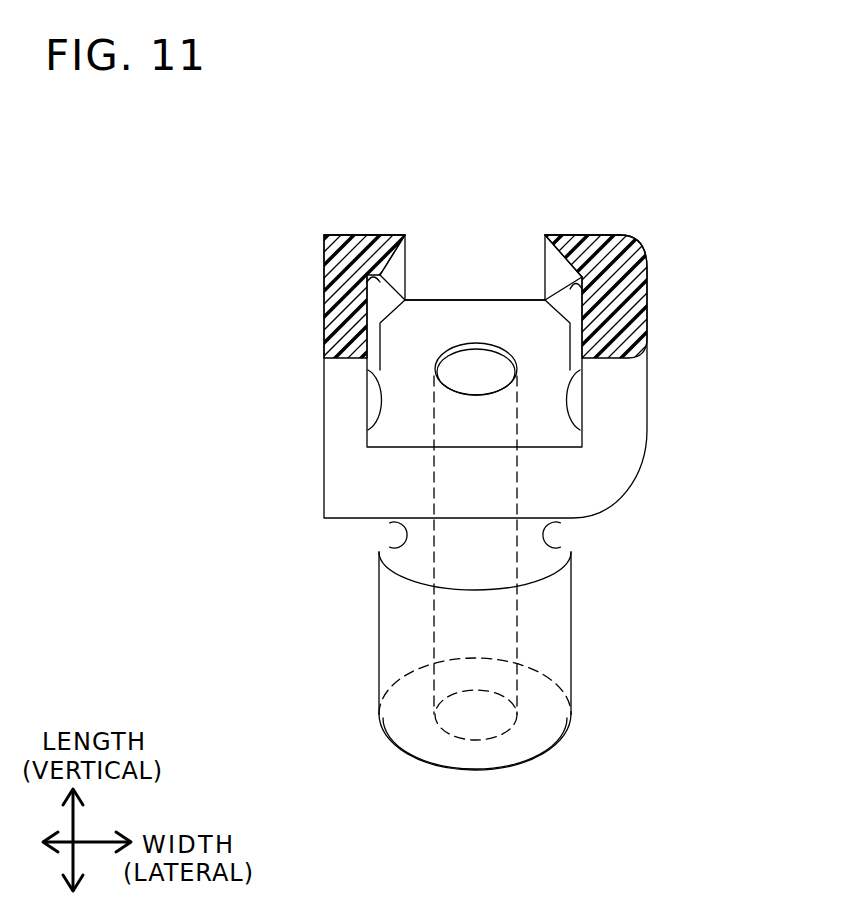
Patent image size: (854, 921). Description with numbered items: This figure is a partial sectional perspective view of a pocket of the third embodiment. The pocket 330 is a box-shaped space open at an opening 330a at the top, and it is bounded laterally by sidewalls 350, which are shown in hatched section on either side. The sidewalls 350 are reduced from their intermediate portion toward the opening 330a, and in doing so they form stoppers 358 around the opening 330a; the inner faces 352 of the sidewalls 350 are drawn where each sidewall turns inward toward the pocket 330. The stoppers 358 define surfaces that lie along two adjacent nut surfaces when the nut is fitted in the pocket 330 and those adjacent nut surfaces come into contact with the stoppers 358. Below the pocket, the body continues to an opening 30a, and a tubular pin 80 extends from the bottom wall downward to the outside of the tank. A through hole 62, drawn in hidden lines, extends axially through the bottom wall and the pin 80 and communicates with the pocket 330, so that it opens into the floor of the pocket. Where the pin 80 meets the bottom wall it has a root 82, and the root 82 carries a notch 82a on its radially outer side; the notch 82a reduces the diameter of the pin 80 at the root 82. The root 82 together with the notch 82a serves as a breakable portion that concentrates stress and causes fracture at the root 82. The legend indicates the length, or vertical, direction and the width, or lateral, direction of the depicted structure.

The opening 30a is at (555, 432).
The sidewall 350 is at (327, 327).
The stopper 358 is at (355, 235).
The pad inner surface 352 is at (383, 271).
The pocket 330 is at (555, 400).
The opening 330a is at (520, 248).
The through hole 62 is at (517, 627).
The pin 80 is at (573, 703).
The root 82 is at (417, 535).
The notch 82a is at (540, 533).